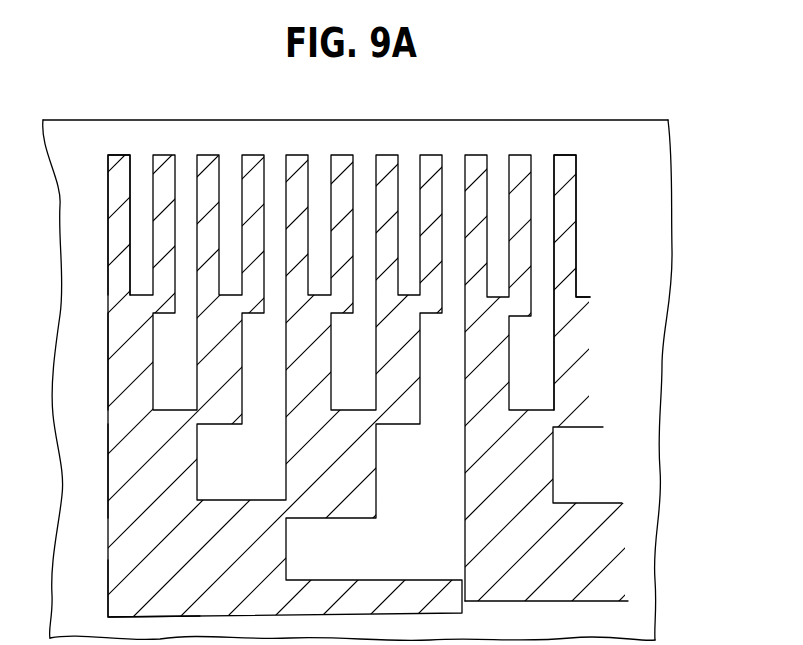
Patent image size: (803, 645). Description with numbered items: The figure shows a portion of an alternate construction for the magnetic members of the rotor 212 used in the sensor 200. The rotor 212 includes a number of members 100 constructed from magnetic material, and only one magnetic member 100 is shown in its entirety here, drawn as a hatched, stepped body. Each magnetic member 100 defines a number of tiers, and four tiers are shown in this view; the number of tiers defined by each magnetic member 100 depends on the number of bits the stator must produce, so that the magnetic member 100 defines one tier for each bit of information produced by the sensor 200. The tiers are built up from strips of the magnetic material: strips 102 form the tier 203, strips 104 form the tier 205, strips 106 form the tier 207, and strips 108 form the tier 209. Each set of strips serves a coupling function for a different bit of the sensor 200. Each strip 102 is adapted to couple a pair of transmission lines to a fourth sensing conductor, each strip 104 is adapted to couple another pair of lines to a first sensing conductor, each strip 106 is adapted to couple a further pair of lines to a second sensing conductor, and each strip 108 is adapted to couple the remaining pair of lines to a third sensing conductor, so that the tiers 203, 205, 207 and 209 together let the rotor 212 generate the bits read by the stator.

The sensor 200 is at (118, 104).
The rotor 212 is at (271, 132).
The magnetic member 100 is at (116, 430).
The strips 102 is at (117, 247).
The strips 104 is at (107, 378).
The strips 106 is at (120, 480).
The strips 108 is at (130, 577).
The tier 203 is at (589, 224).
The tier 205 is at (596, 362).
The tier 207 is at (567, 480).
The tier 209 is at (648, 575).